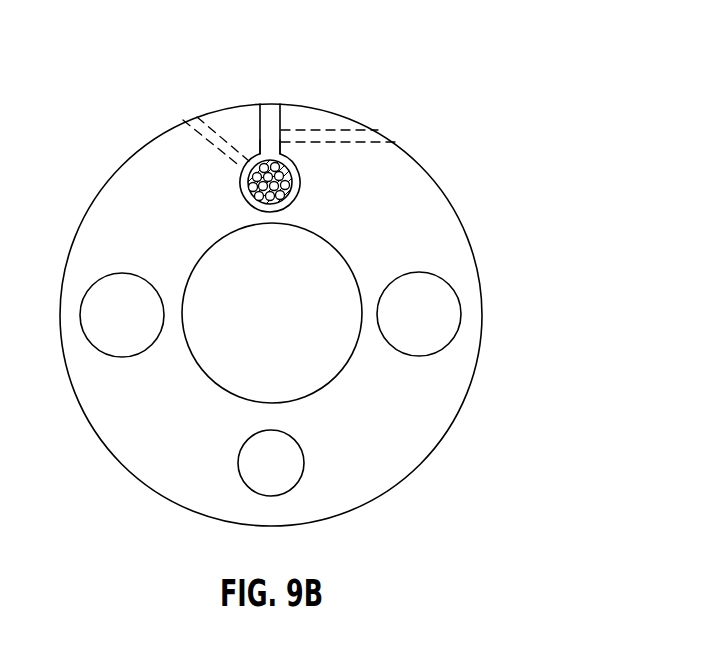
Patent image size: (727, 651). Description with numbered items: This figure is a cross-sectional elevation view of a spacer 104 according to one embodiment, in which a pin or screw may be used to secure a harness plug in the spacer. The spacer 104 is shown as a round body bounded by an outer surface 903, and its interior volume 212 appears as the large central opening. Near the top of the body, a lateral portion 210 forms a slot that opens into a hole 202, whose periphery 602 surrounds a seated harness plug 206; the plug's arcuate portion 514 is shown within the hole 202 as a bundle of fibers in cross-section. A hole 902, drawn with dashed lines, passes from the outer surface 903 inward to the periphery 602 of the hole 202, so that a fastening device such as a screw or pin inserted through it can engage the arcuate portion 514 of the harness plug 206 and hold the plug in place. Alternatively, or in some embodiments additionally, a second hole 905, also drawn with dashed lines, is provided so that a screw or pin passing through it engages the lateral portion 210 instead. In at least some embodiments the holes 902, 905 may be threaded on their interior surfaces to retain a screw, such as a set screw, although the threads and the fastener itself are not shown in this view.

The spacer 104 is at (416, 60).
The outer surface 903 is at (480, 370).
The interior volume 212 is at (293, 324).
The lateral portion 210 is at (276, 112).
The hole 202 is at (308, 182).
The harness plug 206 is at (296, 194).
The arcuate portion 514 is at (232, 187).
The periphery 602 is at (249, 146).
The hole 902 is at (184, 121).
The hole 905 is at (380, 130).